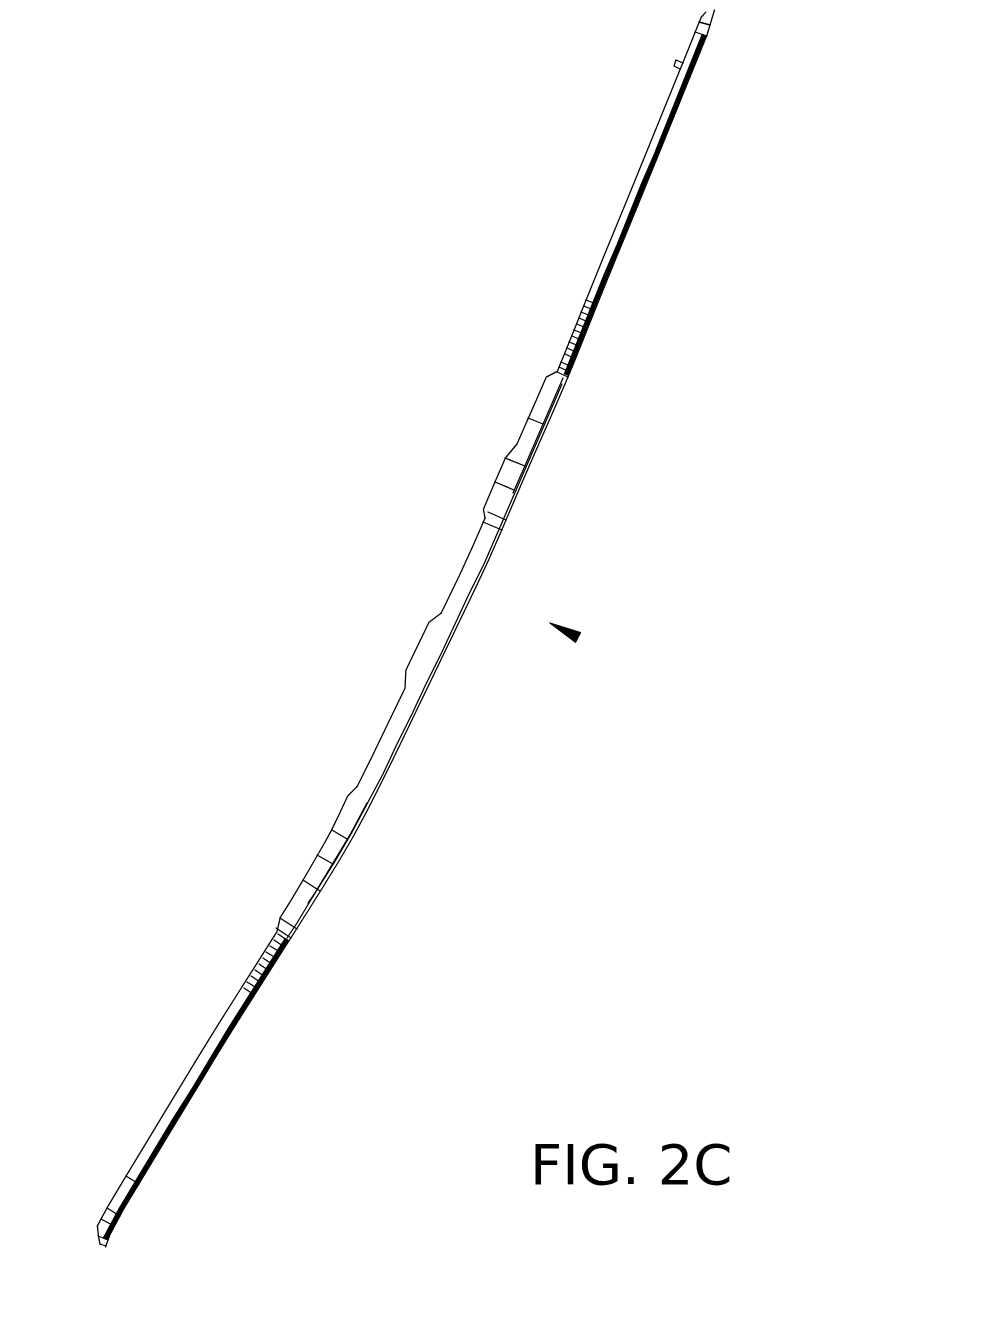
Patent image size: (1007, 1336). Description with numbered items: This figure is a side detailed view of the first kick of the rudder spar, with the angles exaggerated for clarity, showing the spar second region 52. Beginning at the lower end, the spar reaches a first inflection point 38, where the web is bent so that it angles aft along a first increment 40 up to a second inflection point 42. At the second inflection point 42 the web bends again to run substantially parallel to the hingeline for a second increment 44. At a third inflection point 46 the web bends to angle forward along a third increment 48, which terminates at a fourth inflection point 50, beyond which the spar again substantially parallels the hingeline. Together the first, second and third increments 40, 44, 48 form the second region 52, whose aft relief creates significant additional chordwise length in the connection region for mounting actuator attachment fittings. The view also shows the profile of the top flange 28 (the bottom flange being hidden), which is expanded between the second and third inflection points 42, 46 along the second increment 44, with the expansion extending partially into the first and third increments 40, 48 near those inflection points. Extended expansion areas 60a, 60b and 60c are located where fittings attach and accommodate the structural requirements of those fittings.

The top flange 28 is at (380, 750).
The first inflection point 38 is at (112, 1228).
The first increment 40 is at (210, 1072).
The second inflection point 42 is at (355, 838).
The second increment 44 is at (433, 673).
The third inflection point 46 is at (513, 487).
The third increment 48 is at (641, 205).
The fourth inflection point 50 is at (716, 28).
The second region 52 is at (578, 638).
The extended expansion area 60a is at (332, 835).
The extended expansion area 60b is at (417, 650).
The extended expansion area 60c is at (497, 488).